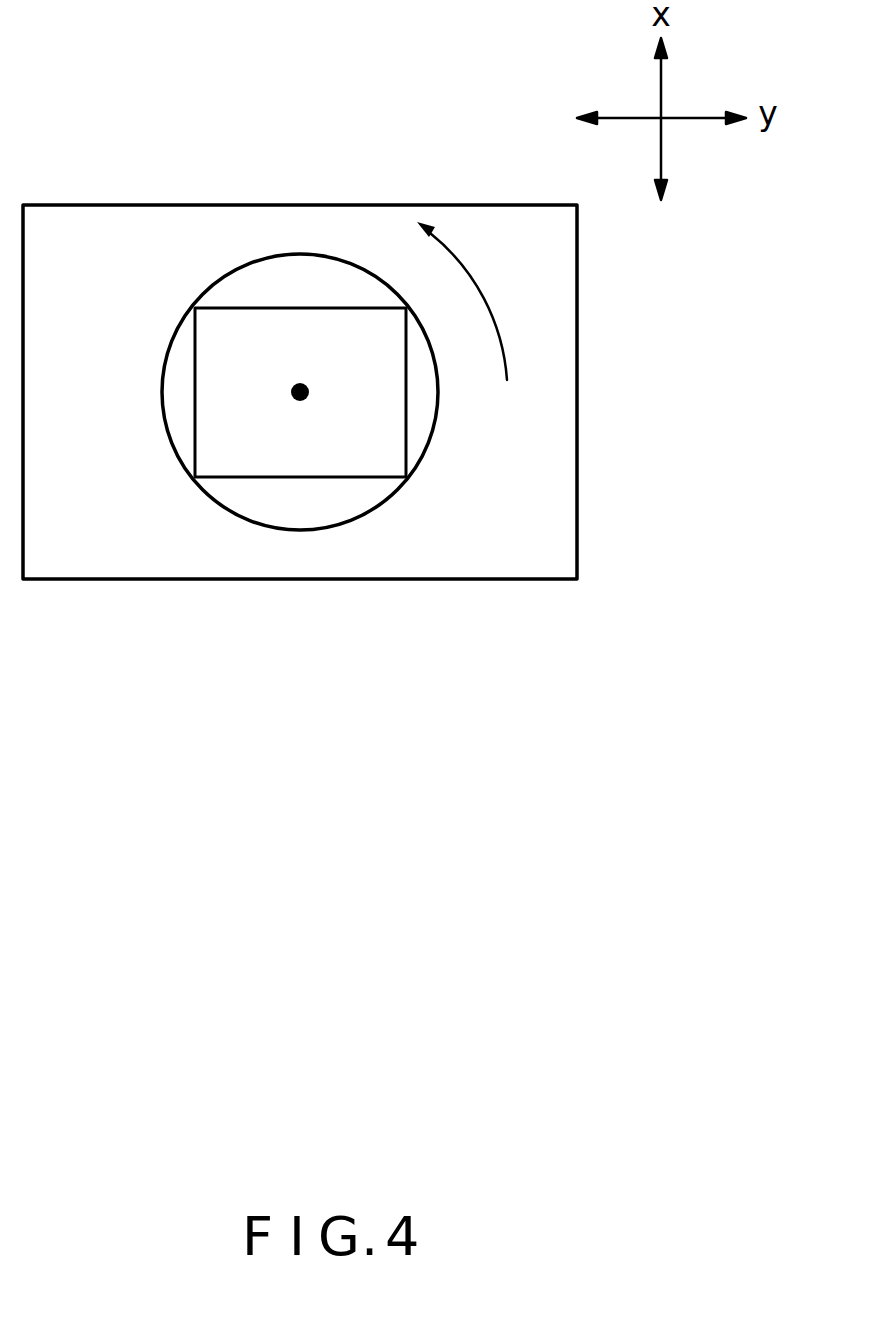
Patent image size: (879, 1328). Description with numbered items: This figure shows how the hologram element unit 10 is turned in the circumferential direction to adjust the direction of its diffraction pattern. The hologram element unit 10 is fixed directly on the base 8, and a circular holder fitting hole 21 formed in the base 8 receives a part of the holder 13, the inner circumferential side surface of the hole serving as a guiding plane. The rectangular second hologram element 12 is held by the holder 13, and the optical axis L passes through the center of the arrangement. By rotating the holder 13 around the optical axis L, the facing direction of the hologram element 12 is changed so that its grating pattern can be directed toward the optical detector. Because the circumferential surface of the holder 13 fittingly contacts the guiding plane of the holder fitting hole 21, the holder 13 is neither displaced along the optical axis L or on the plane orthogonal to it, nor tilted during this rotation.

The base 8 is at (646, 296).
The hologram element unit 10 is at (447, 456).
The second hologram element 12 is at (265, 319).
The holder 13 is at (343, 527).
The holder fitting hole 21 is at (199, 513).
The optical axis L is at (293, 390).